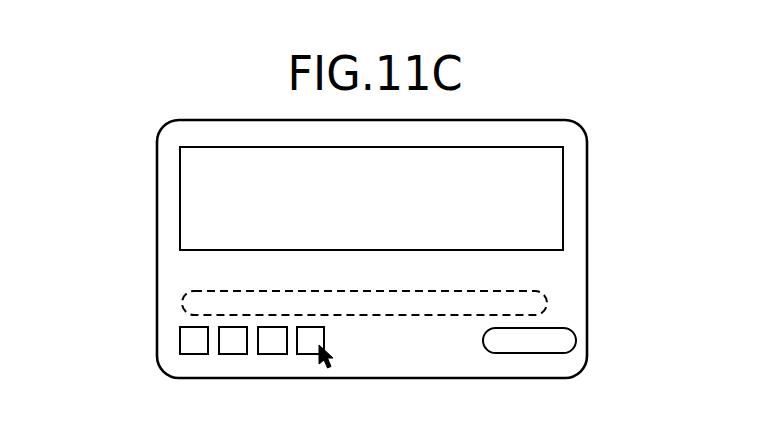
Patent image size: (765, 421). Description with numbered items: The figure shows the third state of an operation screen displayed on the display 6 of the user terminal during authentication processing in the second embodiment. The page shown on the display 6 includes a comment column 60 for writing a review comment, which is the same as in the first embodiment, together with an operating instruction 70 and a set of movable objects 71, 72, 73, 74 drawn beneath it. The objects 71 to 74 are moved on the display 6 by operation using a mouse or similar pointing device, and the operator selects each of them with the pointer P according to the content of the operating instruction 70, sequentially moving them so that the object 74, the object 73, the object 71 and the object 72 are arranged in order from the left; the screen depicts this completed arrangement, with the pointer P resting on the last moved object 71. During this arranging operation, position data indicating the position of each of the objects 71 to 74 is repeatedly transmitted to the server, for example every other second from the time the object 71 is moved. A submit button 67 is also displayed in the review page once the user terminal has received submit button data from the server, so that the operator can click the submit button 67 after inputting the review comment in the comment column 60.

The display 6 is at (157, 142).
The comment column 60 is at (180, 200).
The operating instruction 70 is at (182, 302).
The object 71 is at (308, 355).
The object 72 is at (273, 355).
The object 73 is at (233, 355).
The object 74 is at (193, 355).
The submit button 67 is at (530, 353).
The pointer P is at (327, 352).